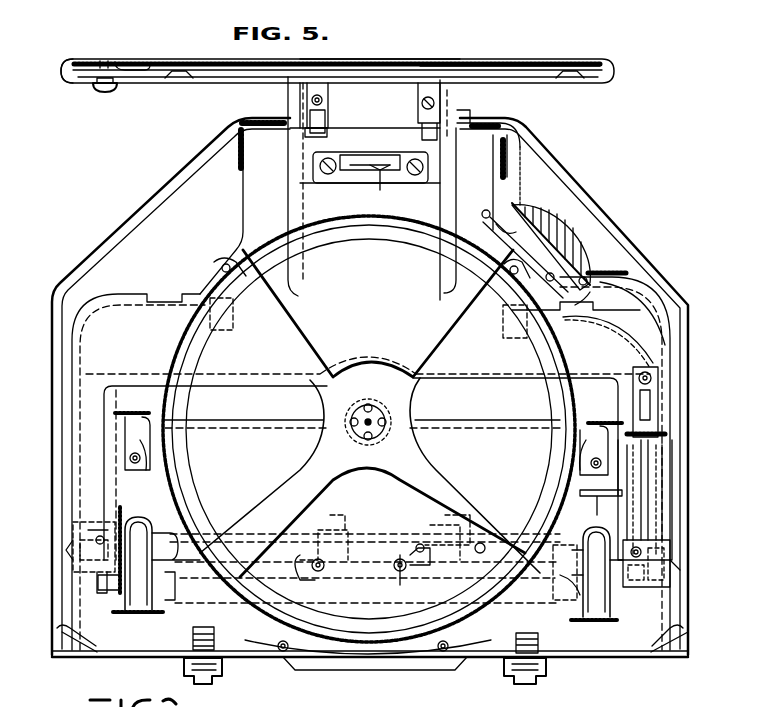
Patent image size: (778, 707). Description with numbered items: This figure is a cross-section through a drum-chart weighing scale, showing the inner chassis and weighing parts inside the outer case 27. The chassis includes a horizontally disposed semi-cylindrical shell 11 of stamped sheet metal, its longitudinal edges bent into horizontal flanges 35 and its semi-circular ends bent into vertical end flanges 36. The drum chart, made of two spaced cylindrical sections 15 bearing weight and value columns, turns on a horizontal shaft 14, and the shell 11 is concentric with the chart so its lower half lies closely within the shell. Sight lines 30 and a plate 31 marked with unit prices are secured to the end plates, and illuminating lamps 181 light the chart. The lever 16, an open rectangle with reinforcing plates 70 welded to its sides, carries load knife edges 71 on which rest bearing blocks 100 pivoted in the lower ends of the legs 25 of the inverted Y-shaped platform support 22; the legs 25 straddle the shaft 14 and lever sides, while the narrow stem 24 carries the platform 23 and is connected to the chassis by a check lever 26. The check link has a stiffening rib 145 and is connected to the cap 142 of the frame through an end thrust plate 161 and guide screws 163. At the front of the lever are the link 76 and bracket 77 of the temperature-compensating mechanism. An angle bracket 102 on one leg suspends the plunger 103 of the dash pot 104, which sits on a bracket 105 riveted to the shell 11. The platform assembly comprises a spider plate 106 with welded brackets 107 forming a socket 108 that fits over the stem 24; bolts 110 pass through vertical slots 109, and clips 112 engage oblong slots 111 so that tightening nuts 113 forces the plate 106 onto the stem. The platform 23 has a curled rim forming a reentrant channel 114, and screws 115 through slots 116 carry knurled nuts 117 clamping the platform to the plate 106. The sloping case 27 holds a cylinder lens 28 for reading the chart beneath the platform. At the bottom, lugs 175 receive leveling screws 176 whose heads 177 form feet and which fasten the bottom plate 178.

The semi-cylindrical shell 11 is at (408, 652).
The horizontal shaft 14 is at (372, 405).
The cylindrical sections 15 is at (176, 352).
The lever 16 is at (173, 508).
The platform support 22 is at (352, 272).
The platform 23 is at (614, 77).
The stem 24 is at (290, 206).
The legs 25 is at (70, 436).
The check lever 26 is at (348, 160).
The outer case 27 is at (55, 377).
The cylinder lens 28 is at (589, 230).
The sight lines 30 is at (246, 272).
The plate 31 is at (620, 272).
The horizontal flanges 35 is at (136, 412).
The end flanges 36 is at (128, 478).
The reinforcing plates 70 is at (591, 622).
The load knife edges 71 is at (633, 602).
The link 76 is at (612, 614).
The bracket 77 is at (340, 540).
The bearing blocks 100 is at (92, 524).
The angle bracket 102 is at (660, 376).
The plunger 103 is at (668, 456).
The dash pot 104 is at (672, 522).
The bracket 105 is at (596, 510).
The plate 106 is at (376, 62).
The brackets 107 is at (208, 86).
The socket 108 is at (306, 98).
The vertical slots 109 is at (418, 62).
The bolts 110 is at (418, 98).
The oblong slots 111 is at (306, 134).
The clips 112 is at (420, 118).
The nuts 113 is at (322, 86).
The reentrant channel 114 is at (66, 84).
The screws 115 is at (100, 60).
The slots 116 is at (120, 62).
The knurled nuts 117 is at (117, 88).
The cap 142 is at (514, 130).
The rib 145 is at (380, 190).
The end thrust plate 161 is at (350, 184).
The screws 163 is at (322, 168).
The lugs 175 is at (546, 644).
The screws 176 is at (192, 636).
The heads 177 is at (202, 672).
The bottom plate 178 is at (260, 658).
The illuminating lamps 181 is at (628, 298).